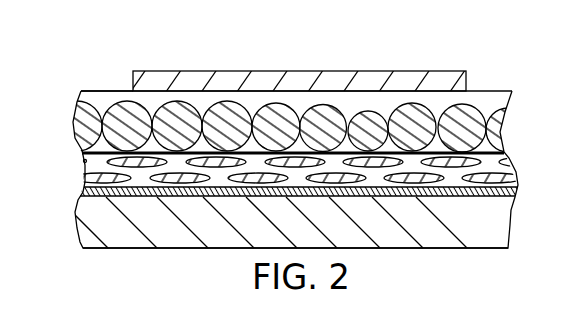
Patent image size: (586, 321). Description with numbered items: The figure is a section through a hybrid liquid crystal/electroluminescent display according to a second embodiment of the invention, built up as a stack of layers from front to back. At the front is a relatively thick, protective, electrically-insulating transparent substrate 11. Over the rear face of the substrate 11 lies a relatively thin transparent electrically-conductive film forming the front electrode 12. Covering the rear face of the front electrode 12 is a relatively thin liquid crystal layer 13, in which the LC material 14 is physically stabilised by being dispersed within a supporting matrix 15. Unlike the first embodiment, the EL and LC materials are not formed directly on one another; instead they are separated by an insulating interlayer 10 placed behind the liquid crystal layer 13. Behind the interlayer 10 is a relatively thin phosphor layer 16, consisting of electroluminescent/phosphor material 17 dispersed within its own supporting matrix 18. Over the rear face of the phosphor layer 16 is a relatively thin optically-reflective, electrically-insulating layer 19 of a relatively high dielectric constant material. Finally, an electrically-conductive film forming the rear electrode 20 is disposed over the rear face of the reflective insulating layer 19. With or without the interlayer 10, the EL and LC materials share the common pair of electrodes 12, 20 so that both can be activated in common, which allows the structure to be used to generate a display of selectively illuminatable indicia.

The insulating interlayer 10 is at (504, 144).
The substrate 11 is at (505, 222).
The front electrode 12 is at (517, 190).
The liquid crystal layer 13 is at (518, 167).
The LC material 14 is at (90, 177).
The supporting matrix 15 is at (84, 154).
The phosphor layer 16 is at (512, 93).
The electroluminescent/phosphor material 17 is at (410, 108).
The supporting matrix 18 is at (487, 100).
The reflective electrically-insulating layer 19 is at (103, 98).
The rear electrode 20 is at (300, 71).